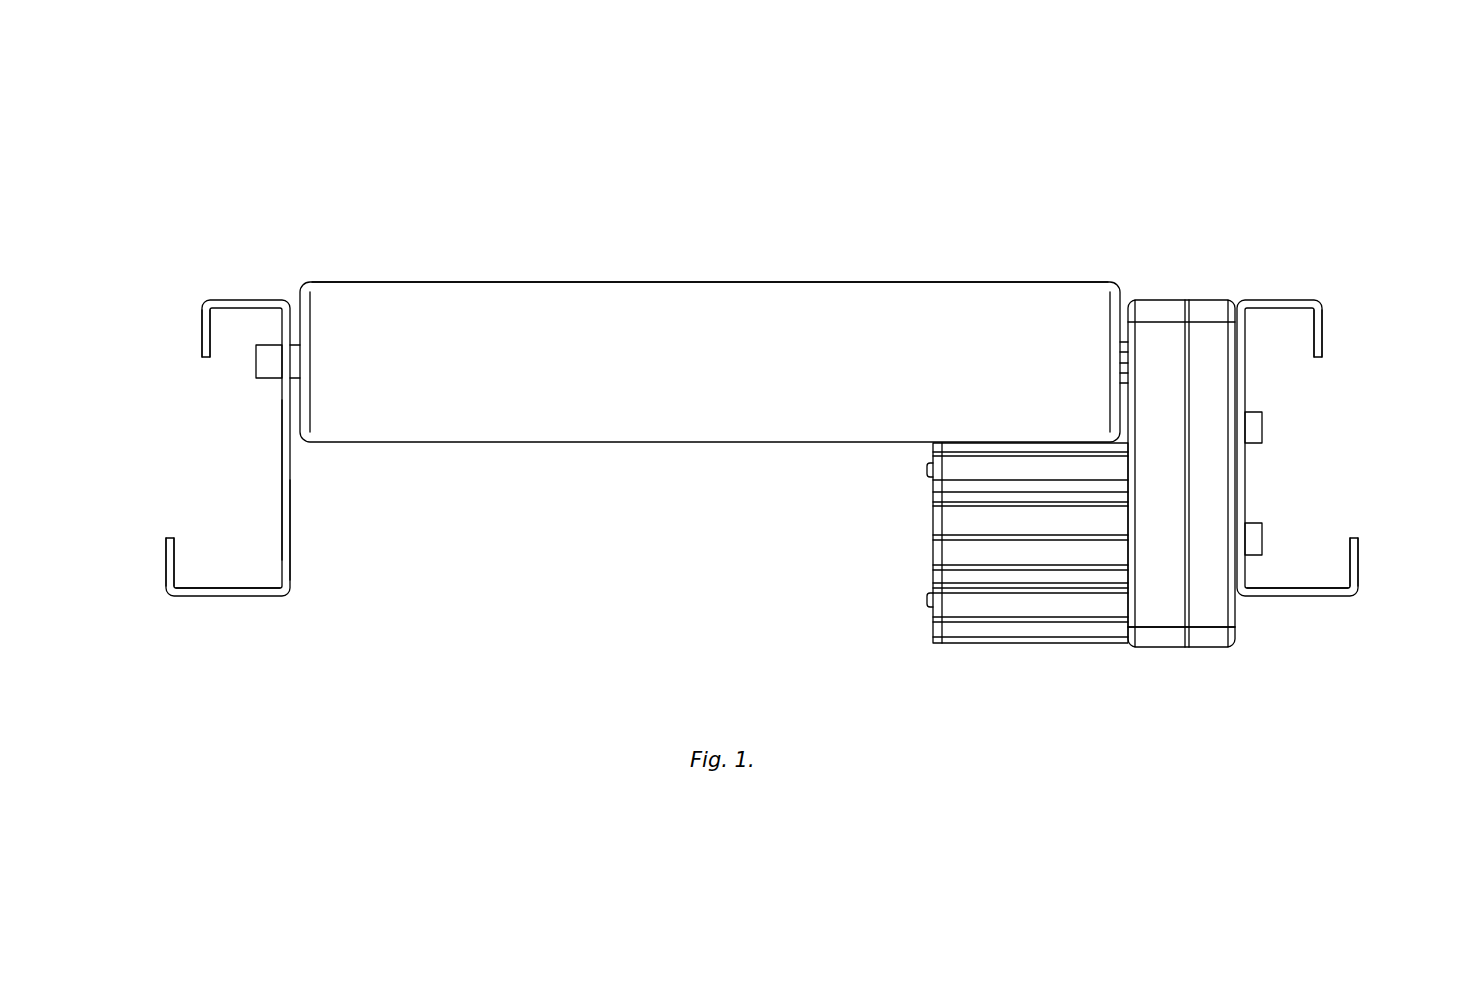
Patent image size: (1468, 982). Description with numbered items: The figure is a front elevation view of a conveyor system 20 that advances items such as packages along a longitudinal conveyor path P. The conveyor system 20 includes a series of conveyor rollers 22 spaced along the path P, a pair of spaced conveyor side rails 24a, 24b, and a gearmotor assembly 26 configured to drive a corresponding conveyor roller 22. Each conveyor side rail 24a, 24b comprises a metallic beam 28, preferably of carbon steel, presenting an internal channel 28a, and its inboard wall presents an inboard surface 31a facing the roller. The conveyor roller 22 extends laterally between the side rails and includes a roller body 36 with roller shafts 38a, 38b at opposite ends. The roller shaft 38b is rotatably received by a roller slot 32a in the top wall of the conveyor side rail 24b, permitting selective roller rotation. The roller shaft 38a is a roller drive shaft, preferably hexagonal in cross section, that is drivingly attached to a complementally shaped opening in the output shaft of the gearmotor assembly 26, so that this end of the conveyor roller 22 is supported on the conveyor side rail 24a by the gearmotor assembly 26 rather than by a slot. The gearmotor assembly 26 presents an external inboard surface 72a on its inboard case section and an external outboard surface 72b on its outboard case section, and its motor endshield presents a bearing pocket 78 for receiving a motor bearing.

The longitudinal conveyor path P is at (624, 166).
The conveyor system 20 is at (986, 163).
The conveyor roller 22 is at (710, 328).
The roller body 36 is at (520, 300).
The roller shaft 38a is at (1118, 360).
The roller shaft 38b is at (269, 360).
The conveyor side rail 24a is at (1330, 598).
The conveyor side rail 24b is at (198, 594).
The gearmotor assembly 26 is at (1153, 332).
The metallic beam 28 is at (1358, 572).
The internal channel 28a is at (224, 587).
The inboard surface 31a is at (292, 483).
The roller slot 32a is at (203, 338).
The external inboard surface 72a is at (1124, 600).
The external outboard surface 72b is at (1243, 600).
The bearing pocket 78 is at (286, 560).